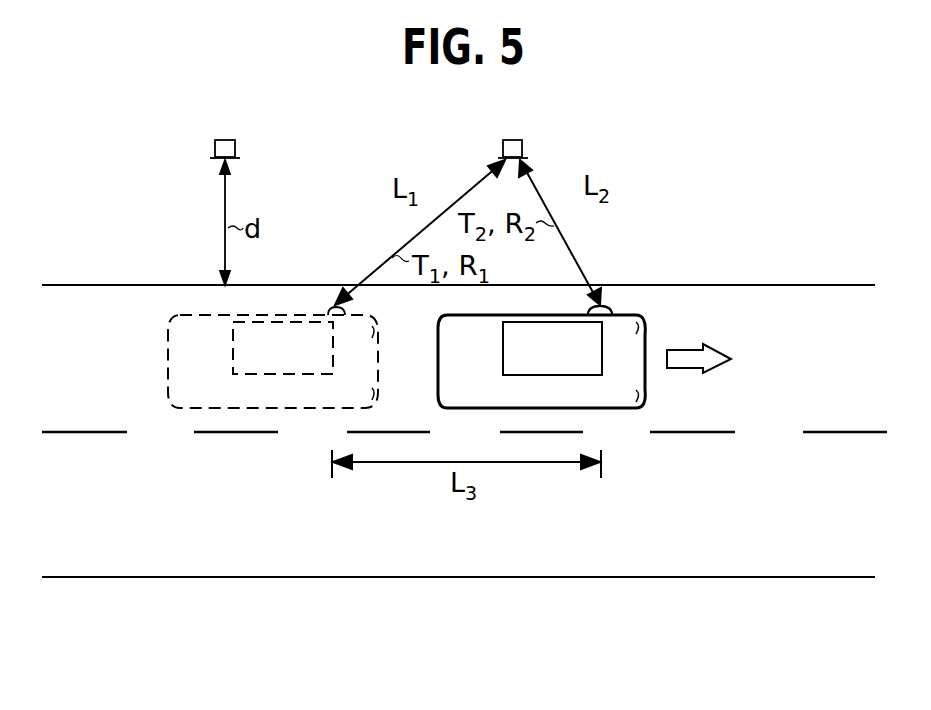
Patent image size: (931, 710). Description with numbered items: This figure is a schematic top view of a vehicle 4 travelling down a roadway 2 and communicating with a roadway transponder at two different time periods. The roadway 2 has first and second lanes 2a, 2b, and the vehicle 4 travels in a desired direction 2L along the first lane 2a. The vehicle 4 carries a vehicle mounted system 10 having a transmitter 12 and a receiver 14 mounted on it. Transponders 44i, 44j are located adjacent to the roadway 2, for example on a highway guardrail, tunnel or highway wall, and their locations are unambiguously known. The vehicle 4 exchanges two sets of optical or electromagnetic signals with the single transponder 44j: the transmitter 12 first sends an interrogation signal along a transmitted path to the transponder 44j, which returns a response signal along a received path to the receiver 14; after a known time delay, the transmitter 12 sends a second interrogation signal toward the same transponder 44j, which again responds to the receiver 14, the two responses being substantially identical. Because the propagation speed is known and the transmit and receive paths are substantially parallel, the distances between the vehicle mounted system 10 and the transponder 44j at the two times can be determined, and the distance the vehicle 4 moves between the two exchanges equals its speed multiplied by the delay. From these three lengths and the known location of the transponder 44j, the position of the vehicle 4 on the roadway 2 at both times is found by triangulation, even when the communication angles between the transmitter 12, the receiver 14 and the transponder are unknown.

The roadway 2 is at (465, 579).
The first lane 2a is at (99, 376).
The second lane 2b is at (99, 539).
The desired direction 2L is at (690, 370).
The vehicle 4 is at (474, 387).
The vehicle mounted system 10 is at (568, 361).
The transmitter 12 is at (613, 311).
The receiver 14 is at (613, 311).
The transponder 44i is at (237, 149).
The transponder 44j is at (524, 149).